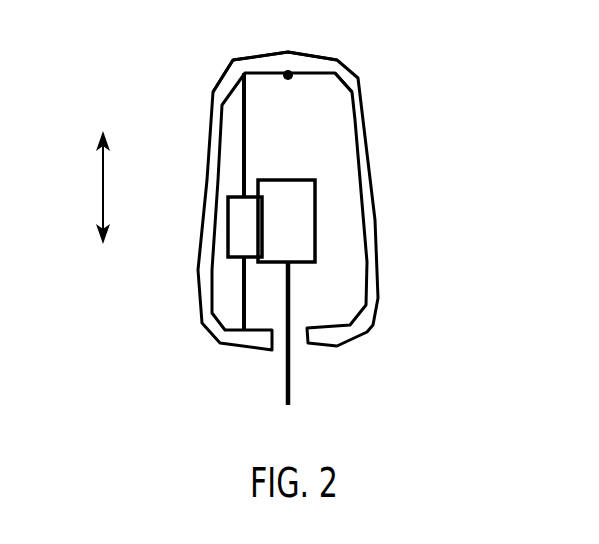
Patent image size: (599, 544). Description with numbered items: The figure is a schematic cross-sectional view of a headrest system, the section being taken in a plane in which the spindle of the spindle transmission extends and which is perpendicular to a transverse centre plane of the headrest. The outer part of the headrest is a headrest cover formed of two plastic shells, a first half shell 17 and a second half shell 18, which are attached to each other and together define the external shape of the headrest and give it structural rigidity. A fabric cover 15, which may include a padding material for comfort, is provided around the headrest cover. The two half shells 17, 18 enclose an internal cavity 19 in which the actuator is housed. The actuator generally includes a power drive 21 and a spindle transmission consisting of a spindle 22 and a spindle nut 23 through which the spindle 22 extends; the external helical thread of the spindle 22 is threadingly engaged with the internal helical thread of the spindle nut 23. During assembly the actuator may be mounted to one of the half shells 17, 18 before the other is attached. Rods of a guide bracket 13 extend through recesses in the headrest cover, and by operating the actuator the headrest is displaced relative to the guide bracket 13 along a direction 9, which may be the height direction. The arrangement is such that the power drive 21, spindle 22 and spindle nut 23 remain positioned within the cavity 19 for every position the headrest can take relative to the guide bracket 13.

The direction 9 is at (103, 181).
The guide bracket 13 is at (292, 393).
The fabric cover 15 is at (262, 57).
The first half shell 17 is at (232, 86).
The second half shell 18 is at (347, 87).
The internal cavity 19 is at (345, 163).
The power drive 21 is at (295, 230).
The spindle 22 is at (245, 157).
The spindle nut 23 is at (232, 223).